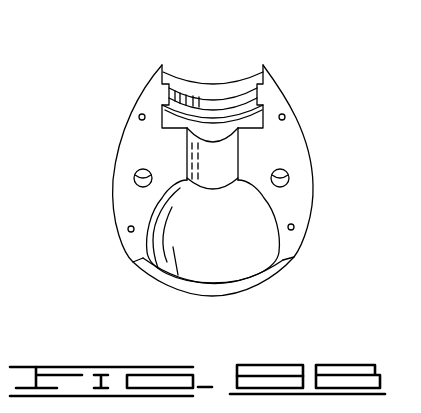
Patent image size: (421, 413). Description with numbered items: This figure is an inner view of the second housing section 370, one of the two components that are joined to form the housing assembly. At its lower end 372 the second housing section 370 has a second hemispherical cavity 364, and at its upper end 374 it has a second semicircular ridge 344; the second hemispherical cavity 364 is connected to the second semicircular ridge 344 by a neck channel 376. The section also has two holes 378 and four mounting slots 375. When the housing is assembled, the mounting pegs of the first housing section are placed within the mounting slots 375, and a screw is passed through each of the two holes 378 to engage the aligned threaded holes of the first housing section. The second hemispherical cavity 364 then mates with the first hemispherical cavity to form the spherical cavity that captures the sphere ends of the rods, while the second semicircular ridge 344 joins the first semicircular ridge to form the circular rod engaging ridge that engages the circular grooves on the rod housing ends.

The second semicircular ridge 344 is at (202, 110).
The second hemispherical cavity 364 is at (246, 243).
The second housing section 370 is at (275, 76).
The lower end 372 is at (146, 262).
The upper end 374 is at (150, 75).
The mounting slots 375 is at (139, 114).
The neck channel 376 is at (222, 161).
The holes 378 is at (135, 174).